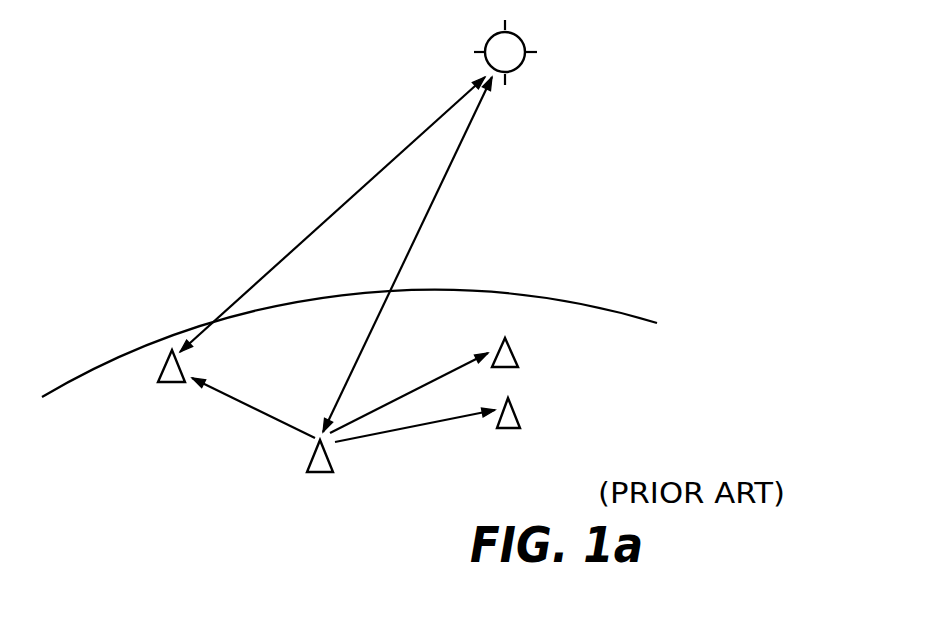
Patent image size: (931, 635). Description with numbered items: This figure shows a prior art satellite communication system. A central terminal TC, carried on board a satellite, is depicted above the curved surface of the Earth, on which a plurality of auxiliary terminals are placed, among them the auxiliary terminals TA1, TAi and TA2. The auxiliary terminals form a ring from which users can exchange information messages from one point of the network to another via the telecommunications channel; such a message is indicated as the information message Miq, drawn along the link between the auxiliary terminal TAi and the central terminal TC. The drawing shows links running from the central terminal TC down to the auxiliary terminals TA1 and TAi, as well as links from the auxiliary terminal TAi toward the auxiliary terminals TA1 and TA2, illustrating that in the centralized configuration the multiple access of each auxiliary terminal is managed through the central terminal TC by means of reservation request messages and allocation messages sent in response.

The central terminal TC is at (519, 44).
The auxiliary terminal TA1 is at (173, 368).
The auxiliary terminal TAi is at (356, 464).
The auxiliary terminal TA2 is at (510, 417).
The information message Miq is at (407, 370).